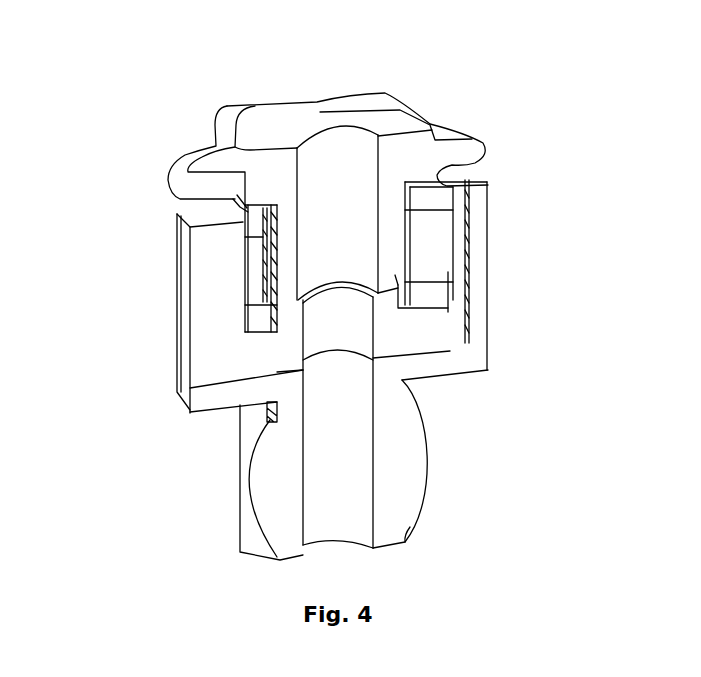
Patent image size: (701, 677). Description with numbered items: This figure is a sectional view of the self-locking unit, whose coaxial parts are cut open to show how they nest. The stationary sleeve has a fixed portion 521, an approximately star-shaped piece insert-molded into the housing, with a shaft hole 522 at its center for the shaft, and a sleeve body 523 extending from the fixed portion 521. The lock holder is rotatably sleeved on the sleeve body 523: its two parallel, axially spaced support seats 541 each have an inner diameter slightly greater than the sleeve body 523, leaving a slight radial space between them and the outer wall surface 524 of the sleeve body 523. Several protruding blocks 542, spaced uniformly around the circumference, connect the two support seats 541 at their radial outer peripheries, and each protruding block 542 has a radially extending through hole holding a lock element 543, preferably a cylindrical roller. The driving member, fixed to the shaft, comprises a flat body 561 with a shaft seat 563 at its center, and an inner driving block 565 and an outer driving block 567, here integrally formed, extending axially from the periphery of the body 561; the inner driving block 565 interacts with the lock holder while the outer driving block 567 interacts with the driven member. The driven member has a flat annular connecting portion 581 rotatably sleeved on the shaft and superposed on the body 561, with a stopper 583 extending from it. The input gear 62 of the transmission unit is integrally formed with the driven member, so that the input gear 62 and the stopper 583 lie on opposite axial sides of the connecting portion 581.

The fixed portion 521 is at (207, 157).
The shaft hole 522 is at (322, 128).
The support seat 541 is at (443, 192).
The stopper 583 is at (480, 217).
The lock element 543 is at (438, 246).
The outer wall surface 524 is at (405, 253).
The sleeve body 523 is at (393, 272).
The body 561 is at (428, 340).
The connecting portion 581 is at (422, 373).
The input gear 62 is at (408, 473).
The inner driving block 565 is at (238, 213).
The outer driving block 567 is at (183, 270).
The protruding block 542 is at (260, 273).
The shaft seat 563 is at (293, 323).